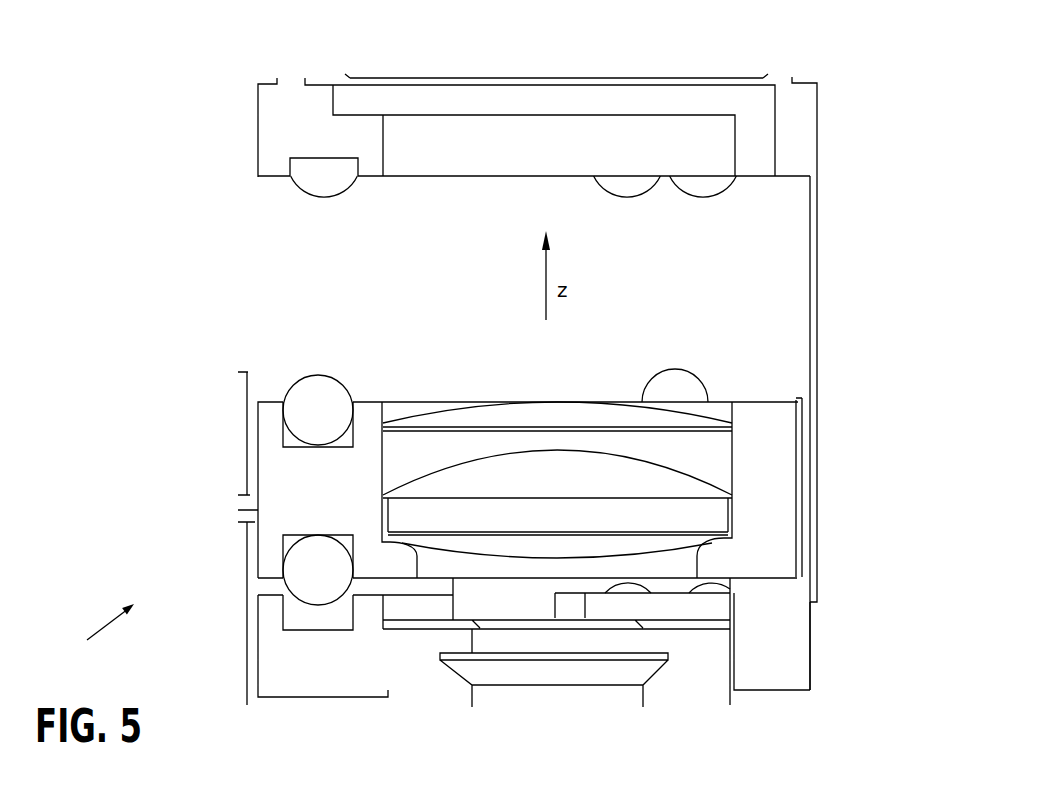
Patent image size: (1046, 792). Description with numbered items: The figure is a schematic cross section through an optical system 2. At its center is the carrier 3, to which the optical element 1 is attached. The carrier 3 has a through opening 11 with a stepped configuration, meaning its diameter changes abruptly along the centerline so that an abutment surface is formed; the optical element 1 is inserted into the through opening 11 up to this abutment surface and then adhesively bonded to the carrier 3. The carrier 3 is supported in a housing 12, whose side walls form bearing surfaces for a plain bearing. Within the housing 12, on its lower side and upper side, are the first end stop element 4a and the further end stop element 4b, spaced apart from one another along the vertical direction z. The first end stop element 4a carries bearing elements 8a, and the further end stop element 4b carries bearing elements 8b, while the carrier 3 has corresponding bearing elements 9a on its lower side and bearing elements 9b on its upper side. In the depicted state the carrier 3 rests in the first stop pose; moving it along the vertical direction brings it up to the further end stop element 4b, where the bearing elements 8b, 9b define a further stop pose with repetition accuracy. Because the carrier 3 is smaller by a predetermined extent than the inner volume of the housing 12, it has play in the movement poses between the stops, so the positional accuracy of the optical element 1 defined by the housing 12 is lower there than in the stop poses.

The optical element 1 is at (713, 458).
The optical system 2 is at (99, 633).
The carrier 3 is at (770, 502).
The first end stop element 4a is at (792, 645).
The further end stop element 4b is at (795, 110).
The bearing elements of the first end stop element 8a is at (833, 553).
The bearing elements of the further end stop element 8b is at (862, 216).
The bearing elements of the carrier 9a is at (690, 707).
The bearing elements of the carrier 9b is at (705, 355).
The through opening 11 is at (587, 570).
The housing 12 is at (818, 613).